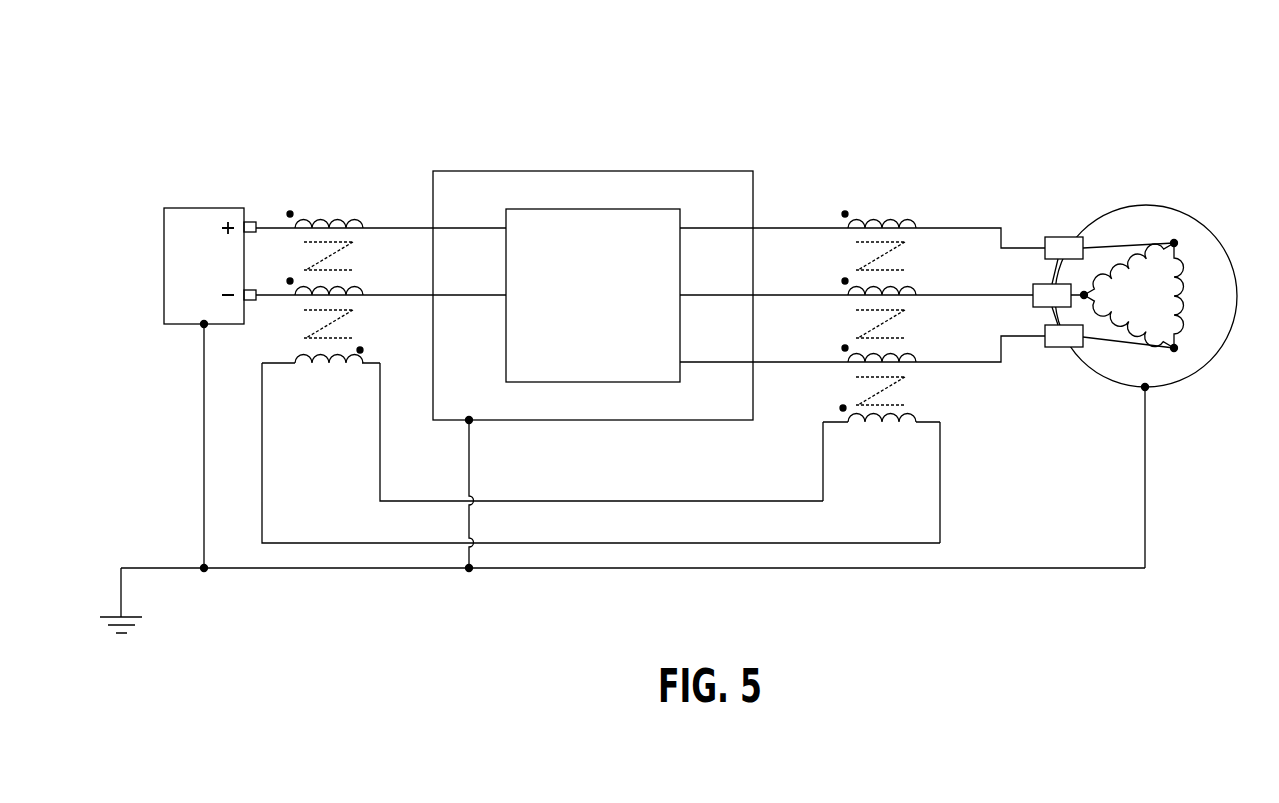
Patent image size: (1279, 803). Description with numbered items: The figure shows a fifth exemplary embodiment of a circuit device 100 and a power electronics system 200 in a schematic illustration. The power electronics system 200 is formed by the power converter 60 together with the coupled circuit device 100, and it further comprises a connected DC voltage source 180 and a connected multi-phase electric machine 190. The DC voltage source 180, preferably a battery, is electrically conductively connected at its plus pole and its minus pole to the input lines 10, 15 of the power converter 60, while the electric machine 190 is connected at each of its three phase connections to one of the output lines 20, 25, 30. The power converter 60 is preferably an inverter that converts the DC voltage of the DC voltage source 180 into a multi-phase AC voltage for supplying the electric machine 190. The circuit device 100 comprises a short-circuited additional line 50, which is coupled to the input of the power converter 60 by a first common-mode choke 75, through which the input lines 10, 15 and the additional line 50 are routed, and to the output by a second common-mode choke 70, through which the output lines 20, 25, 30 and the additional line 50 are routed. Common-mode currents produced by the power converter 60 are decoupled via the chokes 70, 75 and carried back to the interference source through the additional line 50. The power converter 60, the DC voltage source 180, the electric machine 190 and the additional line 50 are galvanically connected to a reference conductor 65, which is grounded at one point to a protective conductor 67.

The circuit device 100 is at (668, 336).
The power electronics system 200 is at (292, 126).
The input line 10 is at (420, 227).
The input line 15 is at (412, 292).
The output line 20 is at (791, 227).
The output line 25 is at (796, 292).
The output line 30 is at (790, 358).
The additional line 50 is at (360, 540).
The power converter 60 is at (693, 186).
The reference conductor 65 is at (244, 566).
The protective conductor 67 is at (121, 596).
The second common-mode choke 70 is at (872, 426).
The first common-mode choke 75 is at (313, 366).
The DC voltage source 180 is at (184, 220).
The electric machine 190 is at (1148, 216).